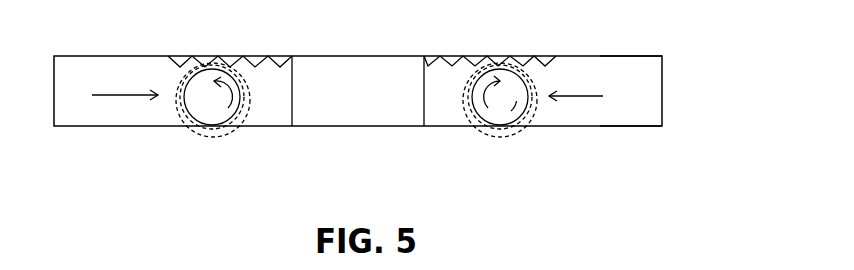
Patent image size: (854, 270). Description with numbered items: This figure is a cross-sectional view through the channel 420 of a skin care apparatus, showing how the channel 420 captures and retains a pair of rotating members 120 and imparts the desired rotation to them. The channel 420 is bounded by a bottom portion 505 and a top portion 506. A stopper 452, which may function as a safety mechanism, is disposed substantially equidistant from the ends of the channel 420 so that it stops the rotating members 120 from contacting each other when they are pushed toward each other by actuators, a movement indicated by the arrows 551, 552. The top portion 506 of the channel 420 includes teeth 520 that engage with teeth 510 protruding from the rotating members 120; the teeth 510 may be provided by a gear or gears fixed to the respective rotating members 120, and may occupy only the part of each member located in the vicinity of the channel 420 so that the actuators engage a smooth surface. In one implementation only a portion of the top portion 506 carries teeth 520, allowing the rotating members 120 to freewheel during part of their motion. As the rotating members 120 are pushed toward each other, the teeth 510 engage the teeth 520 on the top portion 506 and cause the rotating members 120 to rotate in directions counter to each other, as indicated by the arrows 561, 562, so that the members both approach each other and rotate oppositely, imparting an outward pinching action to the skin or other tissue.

The rotating members 120 is at (187, 88).
The teeth 520 is at (255, 56).
The stopper 452 is at (375, 80).
The channel 420 is at (613, 130).
The bottom portion 505 is at (632, 125).
The top portion 506 is at (623, 57).
The teeth 510 is at (240, 118).
The arrow 551 is at (576, 96).
The arrow 552 is at (110, 96).
The arrow 561 is at (483, 100).
The arrow 562 is at (196, 104).